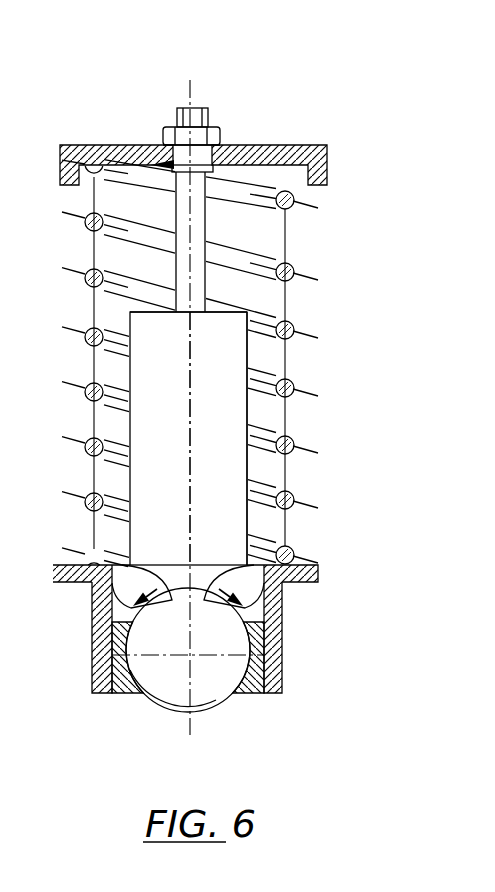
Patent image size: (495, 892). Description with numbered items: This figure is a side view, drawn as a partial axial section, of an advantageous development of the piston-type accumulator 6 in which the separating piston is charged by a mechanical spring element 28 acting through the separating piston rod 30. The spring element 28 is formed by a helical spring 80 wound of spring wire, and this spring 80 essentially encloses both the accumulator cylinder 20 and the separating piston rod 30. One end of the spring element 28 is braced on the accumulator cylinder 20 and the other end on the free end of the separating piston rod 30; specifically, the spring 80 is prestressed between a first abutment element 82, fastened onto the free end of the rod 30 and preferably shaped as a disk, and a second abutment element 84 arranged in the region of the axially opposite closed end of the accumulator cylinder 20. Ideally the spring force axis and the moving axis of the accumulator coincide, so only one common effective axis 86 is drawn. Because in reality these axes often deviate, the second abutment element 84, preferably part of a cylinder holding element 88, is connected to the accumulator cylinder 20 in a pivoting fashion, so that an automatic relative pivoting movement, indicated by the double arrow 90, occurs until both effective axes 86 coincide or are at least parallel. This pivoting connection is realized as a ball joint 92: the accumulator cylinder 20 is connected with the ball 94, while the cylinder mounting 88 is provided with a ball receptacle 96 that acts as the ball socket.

The first abutment element 82 is at (307, 145).
The separating piston rod 30 is at (194, 231).
The helical spring 80 is at (136, 240).
The spring element 28 is at (264, 312).
The piston-type accumulator 6 is at (262, 355).
The accumulator cylinder 20 is at (215, 420).
The common effective axis 86 is at (192, 462).
The second abutment element 84 is at (305, 568).
The double arrow 90 is at (224, 588).
The cylinder holding element 88 is at (295, 645).
The ball joint 92 is at (243, 704).
The ball 94 is at (197, 700).
The ball receptacle 96 is at (156, 680).